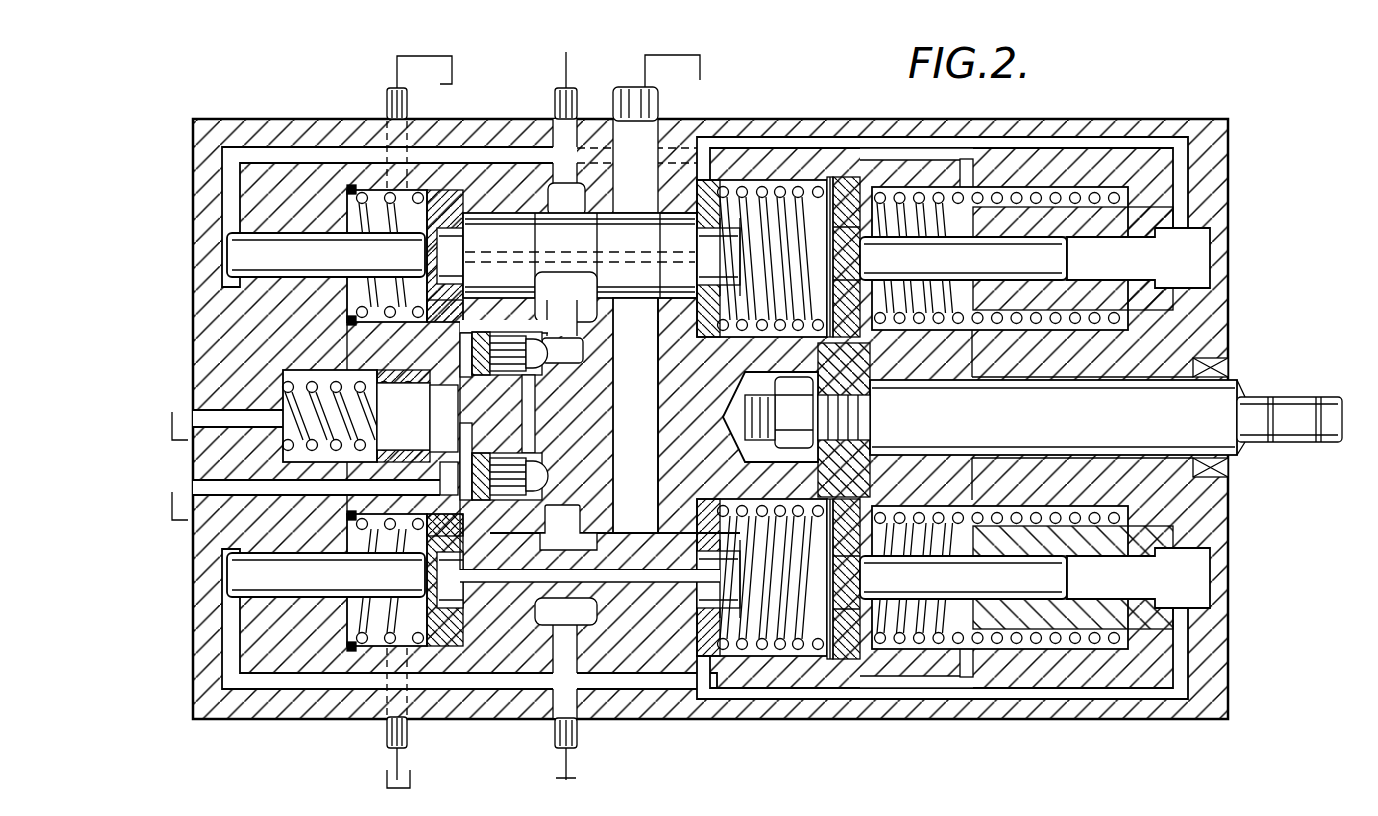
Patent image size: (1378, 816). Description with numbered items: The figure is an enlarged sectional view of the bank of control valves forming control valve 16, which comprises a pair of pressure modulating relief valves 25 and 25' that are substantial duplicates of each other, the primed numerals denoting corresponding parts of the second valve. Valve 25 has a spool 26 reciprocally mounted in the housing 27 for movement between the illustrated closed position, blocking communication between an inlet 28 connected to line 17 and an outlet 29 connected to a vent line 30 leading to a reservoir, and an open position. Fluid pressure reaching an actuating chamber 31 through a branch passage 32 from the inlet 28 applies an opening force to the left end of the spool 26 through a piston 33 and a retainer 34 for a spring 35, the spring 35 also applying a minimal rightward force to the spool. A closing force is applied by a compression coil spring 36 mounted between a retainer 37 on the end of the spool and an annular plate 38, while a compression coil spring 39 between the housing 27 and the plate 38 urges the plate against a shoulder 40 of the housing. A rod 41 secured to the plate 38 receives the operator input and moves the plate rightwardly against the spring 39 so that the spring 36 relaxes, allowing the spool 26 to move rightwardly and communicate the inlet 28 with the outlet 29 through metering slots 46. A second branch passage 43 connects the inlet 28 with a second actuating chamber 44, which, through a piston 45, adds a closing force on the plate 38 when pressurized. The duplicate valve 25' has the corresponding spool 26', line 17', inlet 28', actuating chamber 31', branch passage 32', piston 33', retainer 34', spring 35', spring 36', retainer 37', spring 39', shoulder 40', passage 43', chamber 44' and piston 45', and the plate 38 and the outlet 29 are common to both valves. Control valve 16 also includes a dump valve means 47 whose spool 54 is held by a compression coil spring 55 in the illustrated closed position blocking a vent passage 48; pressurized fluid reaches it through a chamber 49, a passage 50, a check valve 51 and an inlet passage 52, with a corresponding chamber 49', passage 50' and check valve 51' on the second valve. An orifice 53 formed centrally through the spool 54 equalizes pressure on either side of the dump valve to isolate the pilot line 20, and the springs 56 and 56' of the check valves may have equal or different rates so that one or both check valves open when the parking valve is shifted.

The control valve 16 is at (1136, 102).
The line 17 is at (472, 119).
The line 17' is at (520, 717).
The pilot line 20 is at (227, 437).
The pressure modulating relief valve 25 is at (709, 191).
The pressure modulating relief valve 25' is at (477, 664).
The spool 26 is at (543, 421).
The spool 26' is at (590, 622).
The housing 27 is at (1216, 172).
The inlet 28 is at (536, 134).
The inlet 28' is at (533, 702).
The outlet 29 is at (618, 198).
The vent line 30 is at (632, 100).
The actuating chamber 31 is at (326, 228).
The actuating chamber 31' is at (326, 602).
The branch passage 32 is at (461, 185).
The branch passage 32' is at (469, 619).
The piston 33 is at (378, 256).
The piston 33' is at (382, 580).
The retainer 34 is at (389, 295).
The retainer 34' is at (387, 572).
The spring 35 is at (384, 204).
The spring 35' is at (361, 592).
The compression coil spring 36 is at (807, 214).
The compression coil spring 36' is at (785, 595).
The retainer 37 is at (762, 240).
The retainer 37' is at (717, 585).
The annular plate 38 is at (858, 470).
The compression coil spring 39 is at (1022, 238).
The compression coil spring 39' is at (1022, 632).
The shoulder 40 is at (859, 212).
The shoulder 40' is at (846, 579).
The rod 41 is at (1026, 428).
The second branch passage 43 is at (942, 156).
The second branch passage 43' is at (942, 683).
The second actuating chamber 44 is at (1138, 258).
The second actuating chamber 44' is at (1138, 578).
The piston 45 is at (963, 243).
The piston 45' is at (996, 577).
The metering slots 46 is at (598, 308).
The dump valve means 47 is at (284, 376).
The vent passage 48 is at (295, 492).
The chamber 49 is at (566, 304).
The chamber 49' is at (566, 616).
The passage 50 is at (557, 348).
The passage 50' is at (528, 497).
The check valve 51 is at (591, 371).
The check valve 51' is at (570, 457).
The inlet passage 52 is at (535, 420).
The orifice 53 is at (440, 423).
The spool 54 is at (393, 375).
The compression coil spring 55 is at (283, 400).
The spring 56 is at (477, 352).
The spring 56' is at (507, 496).